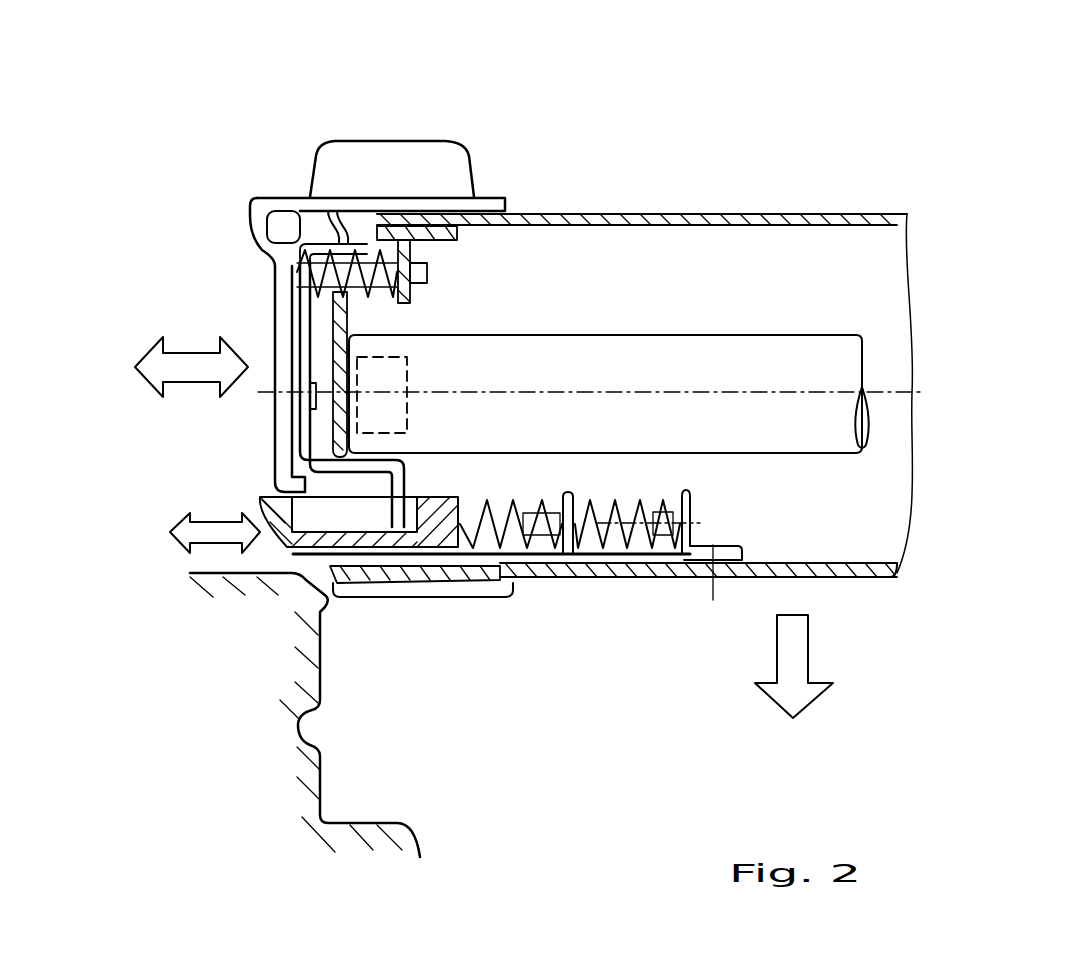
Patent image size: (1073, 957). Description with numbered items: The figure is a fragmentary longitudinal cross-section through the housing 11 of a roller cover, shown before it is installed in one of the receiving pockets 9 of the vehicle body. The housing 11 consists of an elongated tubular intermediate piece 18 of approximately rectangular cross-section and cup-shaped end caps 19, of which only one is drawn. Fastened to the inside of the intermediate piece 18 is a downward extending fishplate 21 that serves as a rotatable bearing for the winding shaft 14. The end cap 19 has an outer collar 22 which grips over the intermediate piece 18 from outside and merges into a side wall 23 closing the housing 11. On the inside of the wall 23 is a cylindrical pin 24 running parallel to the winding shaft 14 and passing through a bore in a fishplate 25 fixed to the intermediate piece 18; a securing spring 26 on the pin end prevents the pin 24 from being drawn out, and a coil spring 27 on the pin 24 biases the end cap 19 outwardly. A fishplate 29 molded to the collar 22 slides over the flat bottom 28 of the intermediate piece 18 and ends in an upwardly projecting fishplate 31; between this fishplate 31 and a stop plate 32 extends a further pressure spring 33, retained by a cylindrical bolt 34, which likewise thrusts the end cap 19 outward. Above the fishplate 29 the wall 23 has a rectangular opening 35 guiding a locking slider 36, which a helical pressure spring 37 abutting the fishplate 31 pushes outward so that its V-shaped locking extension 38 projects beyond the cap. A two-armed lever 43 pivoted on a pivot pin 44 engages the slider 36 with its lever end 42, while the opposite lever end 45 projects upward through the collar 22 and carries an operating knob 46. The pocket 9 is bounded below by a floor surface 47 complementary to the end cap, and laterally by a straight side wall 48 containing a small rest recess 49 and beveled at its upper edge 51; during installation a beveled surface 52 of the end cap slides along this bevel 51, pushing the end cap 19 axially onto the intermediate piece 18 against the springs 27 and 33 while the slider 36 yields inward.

The receiving pocket 9 is at (425, 733).
The housing 11 is at (757, 177).
The winding shaft 14 is at (700, 337).
The intermediate piece 18 is at (845, 212).
The end cap 19 is at (505, 190).
The fishplate 21 is at (345, 322).
The collar 22 is at (404, 597).
The side wall 23 is at (280, 338).
The cylindrical pin 24 is at (345, 247).
The fishplate 25 is at (425, 262).
The securing spring 26 is at (430, 276).
The coil spring 27 is at (277, 290).
The bottom 28 is at (860, 562).
The fishplate 29 is at (548, 580).
The fishplate 31 is at (575, 502).
The stop plate 32 is at (693, 505).
The pressure spring 33 is at (640, 580).
The cylindrical bolt 34 is at (700, 545).
The rectangular opening 35 is at (277, 497).
The locking slider 36 is at (290, 572).
The helical pressure spring 37 is at (487, 503).
The locking extension 38 is at (253, 505).
The lever end 42 is at (403, 493).
The two-armed lever 43 is at (307, 433).
The pivot pin 44 is at (313, 392).
The lever end 45 is at (337, 255).
The operating knob 46 is at (335, 165).
The floor surface 47 is at (357, 825).
The side wall 48 is at (300, 787).
The rest recess 49 is at (320, 722).
The beveled upper edge 51 is at (300, 597).
The beveled surface 52 is at (327, 600).